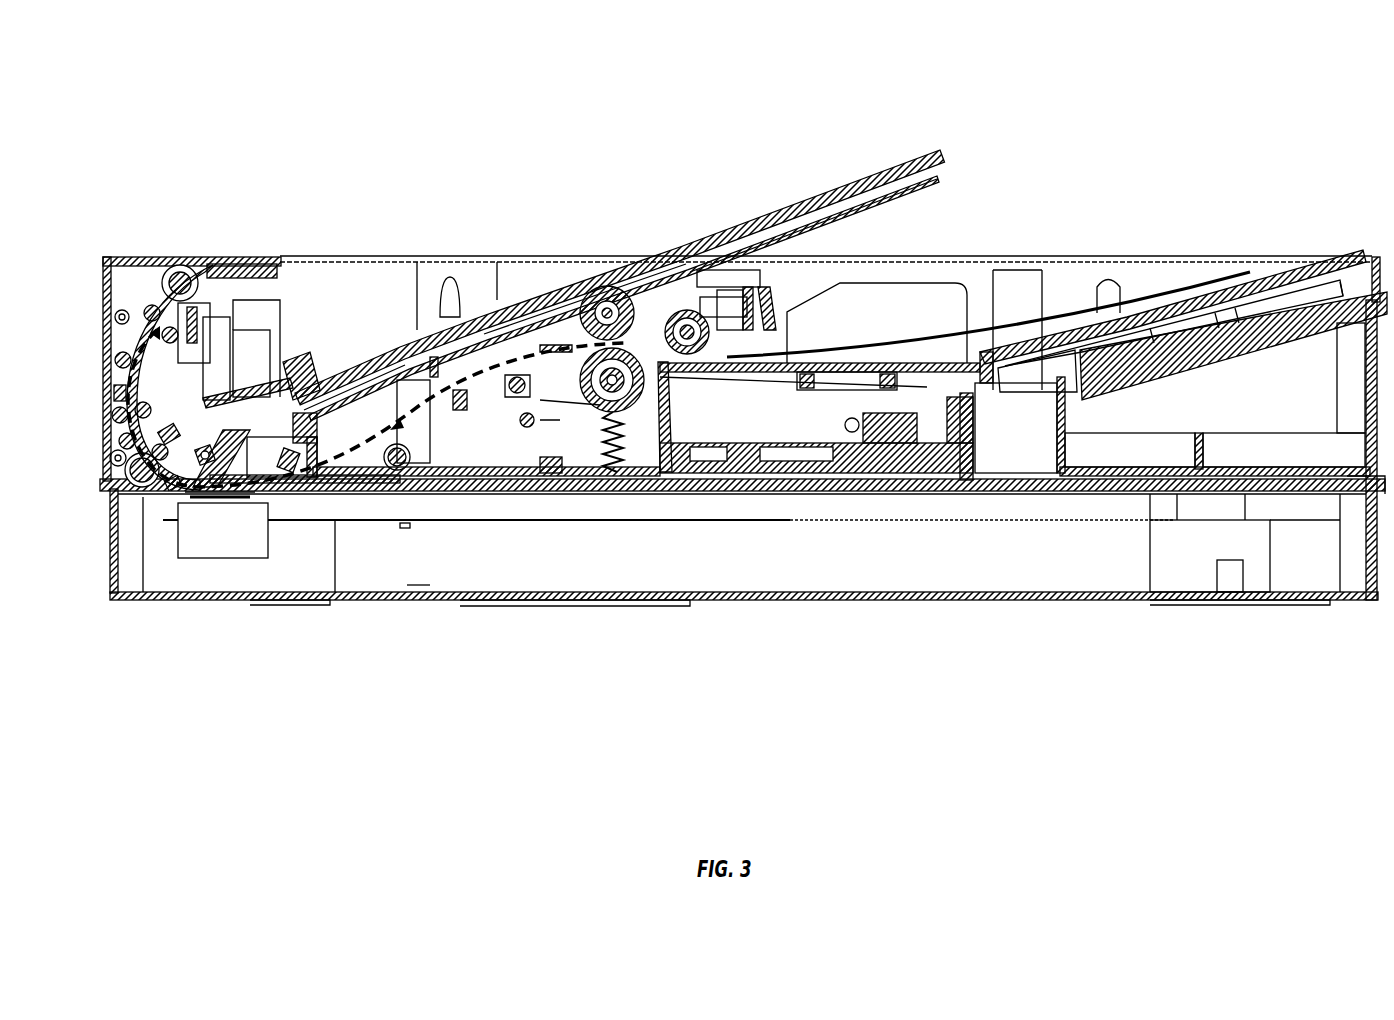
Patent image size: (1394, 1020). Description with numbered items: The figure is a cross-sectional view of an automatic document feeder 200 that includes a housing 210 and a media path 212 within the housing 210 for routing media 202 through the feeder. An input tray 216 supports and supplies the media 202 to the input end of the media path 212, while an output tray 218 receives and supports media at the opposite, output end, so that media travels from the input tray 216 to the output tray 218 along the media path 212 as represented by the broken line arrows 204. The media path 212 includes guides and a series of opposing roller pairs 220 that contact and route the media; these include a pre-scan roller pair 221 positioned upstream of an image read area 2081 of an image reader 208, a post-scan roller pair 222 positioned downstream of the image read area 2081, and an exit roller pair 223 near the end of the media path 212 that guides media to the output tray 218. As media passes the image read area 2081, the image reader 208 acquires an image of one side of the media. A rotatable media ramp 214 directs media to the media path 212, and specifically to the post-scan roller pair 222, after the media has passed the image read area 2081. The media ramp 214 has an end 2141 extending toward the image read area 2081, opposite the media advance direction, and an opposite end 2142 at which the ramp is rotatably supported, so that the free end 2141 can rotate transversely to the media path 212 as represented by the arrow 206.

The automatic document feeder 200 is at (1302, 142).
The media 202 is at (863, 350).
The broken line arrows 204 is at (485, 370).
The arrow 206 is at (201, 463).
The image reader 208 is at (218, 560).
The housing 210 is at (103, 307).
The media path 212 is at (105, 397).
The rotatable media ramp 214 is at (189, 486).
The input tray 216 is at (1278, 277).
The output tray 218 is at (400, 345).
The opposing roller pairs 220 is at (420, 213).
The pre-scan roller pair 221 is at (401, 504).
The post-scan roller pair 222 is at (110, 445).
The exit roller pair 223 is at (148, 283).
The image read area 2081 is at (190, 495).
The end of media ramp 2141 is at (218, 474).
The opposite end of media ramp 2142 is at (168, 483).